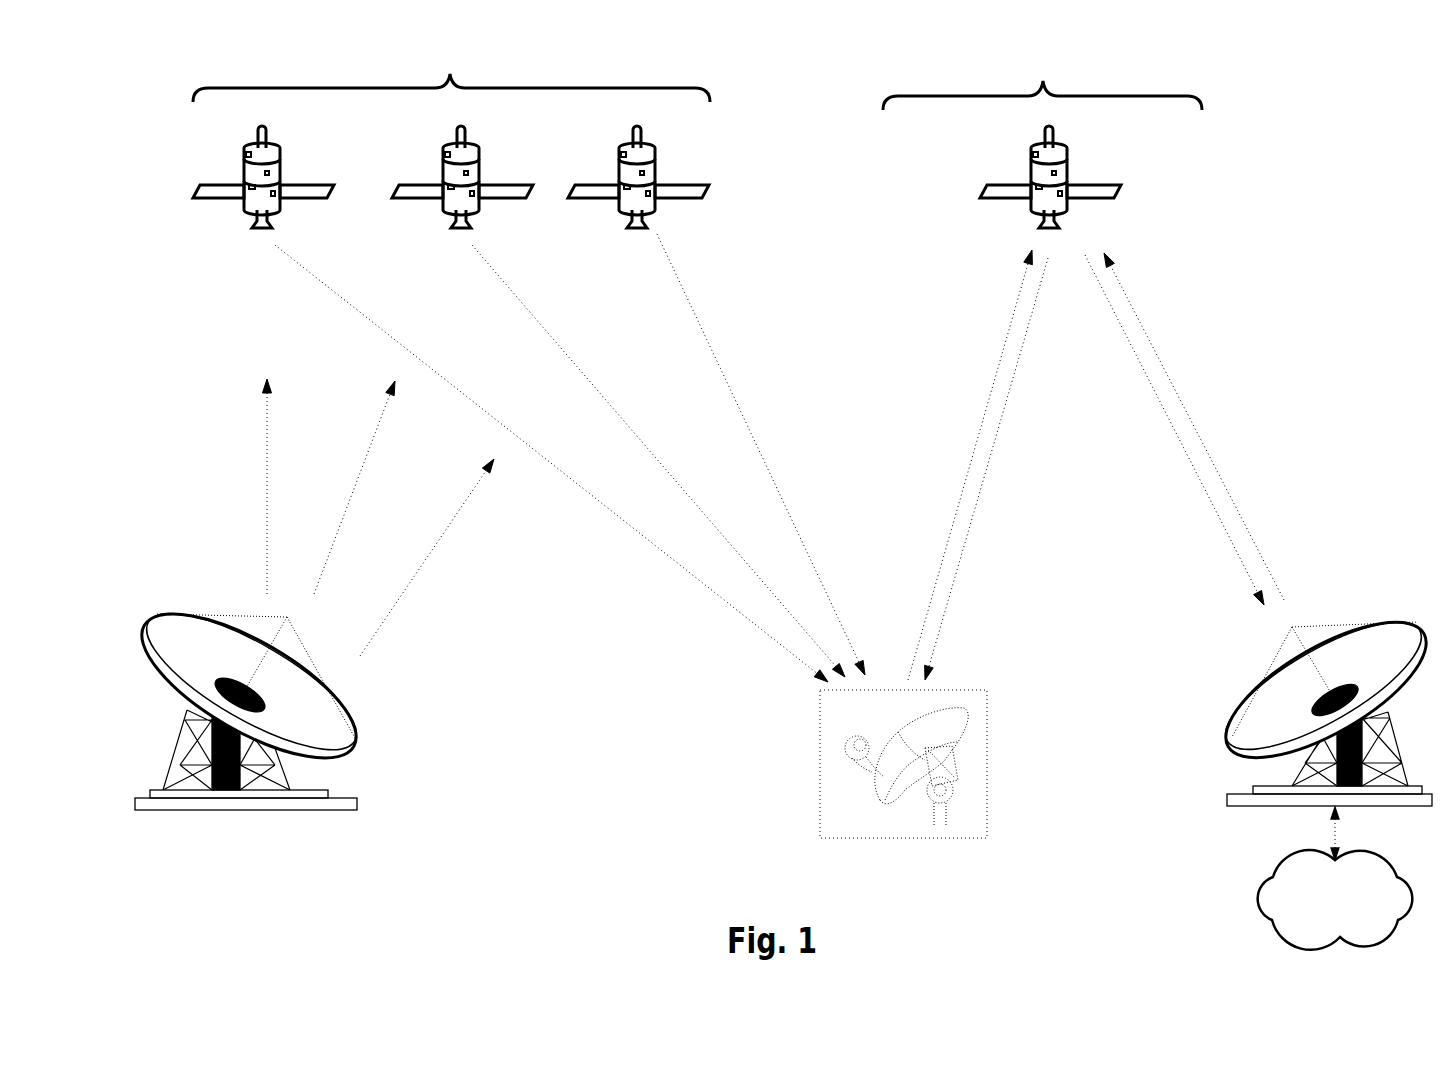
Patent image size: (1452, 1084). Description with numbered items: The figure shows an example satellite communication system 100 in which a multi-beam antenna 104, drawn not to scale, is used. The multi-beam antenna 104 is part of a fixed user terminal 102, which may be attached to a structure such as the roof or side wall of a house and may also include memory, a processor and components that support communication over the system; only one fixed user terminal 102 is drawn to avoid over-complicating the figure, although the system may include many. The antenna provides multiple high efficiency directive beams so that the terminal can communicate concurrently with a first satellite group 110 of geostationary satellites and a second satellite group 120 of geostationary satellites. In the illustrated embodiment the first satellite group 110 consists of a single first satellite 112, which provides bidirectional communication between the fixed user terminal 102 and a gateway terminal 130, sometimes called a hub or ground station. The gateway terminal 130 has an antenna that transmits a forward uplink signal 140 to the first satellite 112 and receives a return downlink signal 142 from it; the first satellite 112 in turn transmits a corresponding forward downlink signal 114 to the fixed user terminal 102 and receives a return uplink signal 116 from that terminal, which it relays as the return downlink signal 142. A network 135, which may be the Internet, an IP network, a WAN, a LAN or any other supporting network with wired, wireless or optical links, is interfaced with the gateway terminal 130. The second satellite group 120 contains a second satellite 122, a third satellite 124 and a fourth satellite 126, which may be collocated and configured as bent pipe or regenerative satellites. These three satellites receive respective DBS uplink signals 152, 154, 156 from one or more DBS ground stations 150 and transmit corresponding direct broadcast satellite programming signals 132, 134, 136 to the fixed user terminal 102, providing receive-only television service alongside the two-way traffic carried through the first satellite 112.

The satellite communication system 100 is at (1394, 81).
The fixed user terminal 102 is at (828, 838).
The multi-beam antenna 104 is at (987, 718).
The first satellite group 110 is at (1027, 71).
The first satellite 112 is at (1032, 157).
The forward downlink signal 114 is at (975, 528).
The return uplink signal 116 is at (993, 378).
The second satellite group 120 is at (429, 63).
The second satellite 122 is at (245, 157).
The third satellite 124 is at (444, 157).
The fourth satellite 126 is at (620, 157).
The gateway terminal 130 is at (1233, 757).
The DBS programming signal 132 is at (389, 337).
The DBS programming signal 134 is at (555, 336).
The network 135 is at (1250, 905).
The DBS programming signal 136 is at (704, 333).
The forward uplink signal 140 is at (1200, 440).
The return downlink signal 142 is at (1182, 443).
The DBS ground station 150 is at (350, 802).
The DBS uplink signal 152 is at (268, 530).
The DBS uplink signal 154 is at (362, 470).
The DBS uplink signal 156 is at (420, 567).